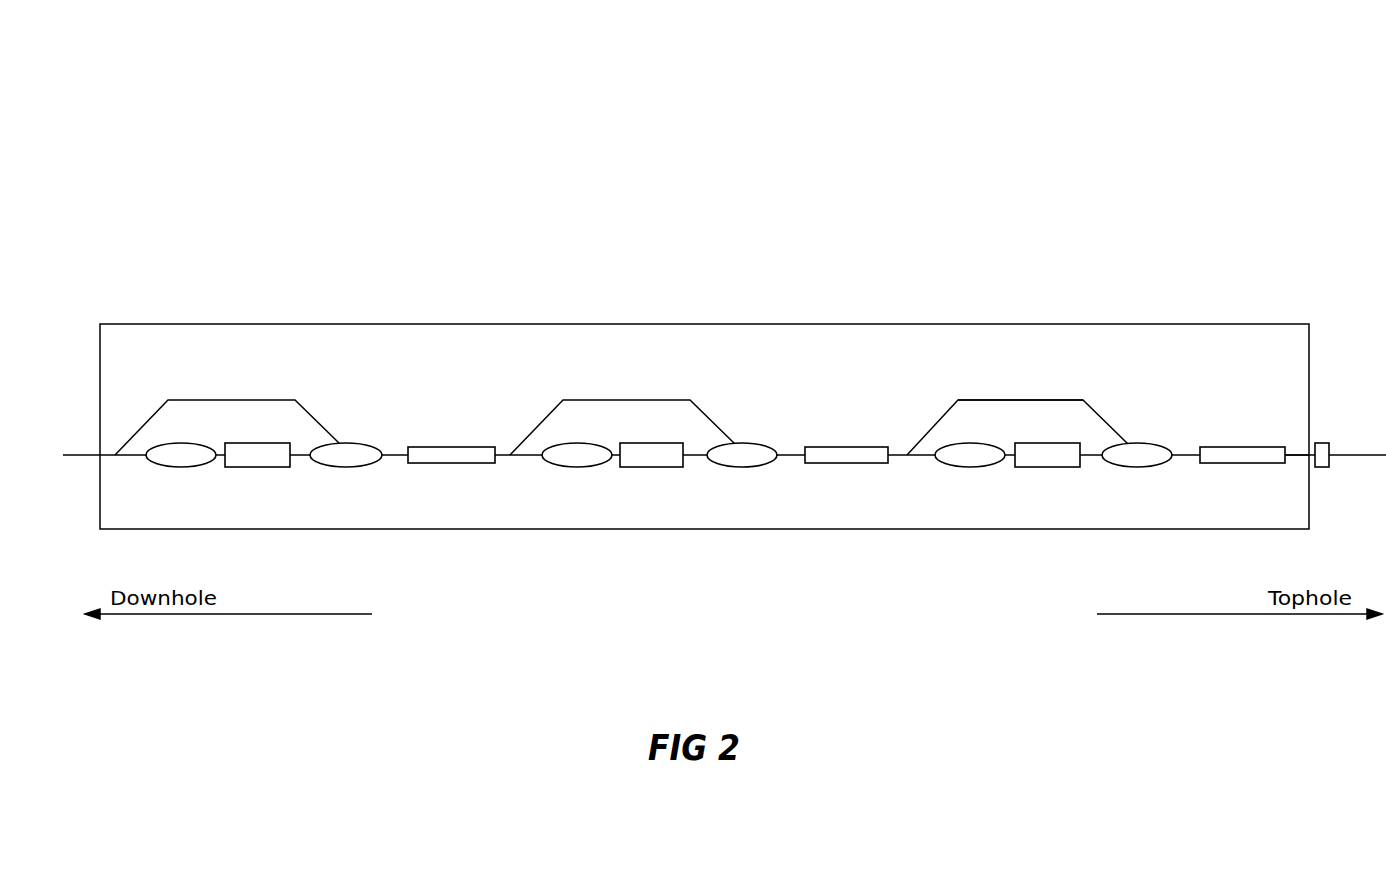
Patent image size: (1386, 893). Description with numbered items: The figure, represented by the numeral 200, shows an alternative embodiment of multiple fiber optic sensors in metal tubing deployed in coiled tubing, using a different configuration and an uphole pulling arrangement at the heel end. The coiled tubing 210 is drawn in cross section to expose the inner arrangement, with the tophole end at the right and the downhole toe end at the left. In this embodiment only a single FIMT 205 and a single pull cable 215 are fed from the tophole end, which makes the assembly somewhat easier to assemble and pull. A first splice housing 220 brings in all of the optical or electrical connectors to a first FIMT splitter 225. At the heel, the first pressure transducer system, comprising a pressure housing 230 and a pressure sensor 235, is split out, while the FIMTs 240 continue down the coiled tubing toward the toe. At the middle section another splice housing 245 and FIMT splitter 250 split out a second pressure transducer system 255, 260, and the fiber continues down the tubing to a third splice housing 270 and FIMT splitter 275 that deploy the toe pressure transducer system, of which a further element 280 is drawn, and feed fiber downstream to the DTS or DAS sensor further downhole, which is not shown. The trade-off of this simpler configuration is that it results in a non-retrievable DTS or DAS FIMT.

The alternative embodiment of multiple FIMTs deployed in coiled tubing 200 is at (222, 120).
The FIMT 205 is at (1294, 452).
The coiled tubing 210 is at (508, 324).
The pull cable 215 is at (1354, 452).
The first splice housing 220 is at (1250, 463).
The first FIMT splitter 225 is at (1135, 443).
The pressure housing 230 is at (962, 467).
The pressure sensor 235 is at (1038, 467).
The FIMTs 240 is at (995, 400).
The splice housing 245 is at (827, 463).
The FIMT splitter 250 is at (738, 443).
The pressure transducer system component 255 is at (653, 467).
The pressure transducer system component 260 is at (572, 467).
The third splice housing 270 is at (450, 465).
The FIMT splitter 275 is at (354, 443).
The sensor node 280 is at (243, 400).